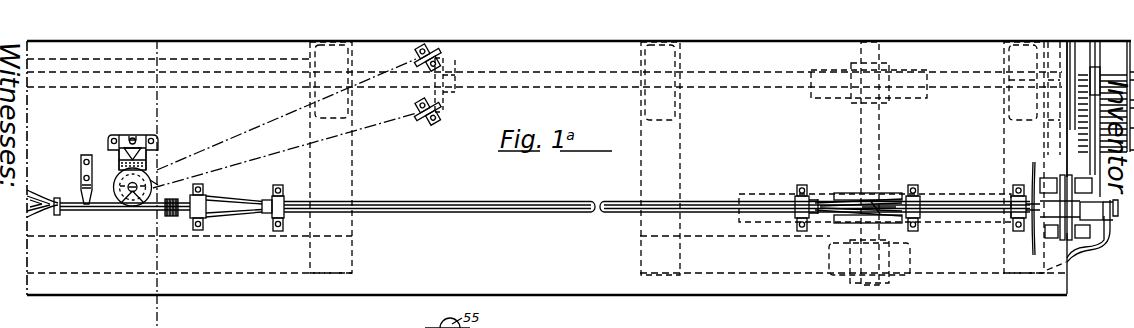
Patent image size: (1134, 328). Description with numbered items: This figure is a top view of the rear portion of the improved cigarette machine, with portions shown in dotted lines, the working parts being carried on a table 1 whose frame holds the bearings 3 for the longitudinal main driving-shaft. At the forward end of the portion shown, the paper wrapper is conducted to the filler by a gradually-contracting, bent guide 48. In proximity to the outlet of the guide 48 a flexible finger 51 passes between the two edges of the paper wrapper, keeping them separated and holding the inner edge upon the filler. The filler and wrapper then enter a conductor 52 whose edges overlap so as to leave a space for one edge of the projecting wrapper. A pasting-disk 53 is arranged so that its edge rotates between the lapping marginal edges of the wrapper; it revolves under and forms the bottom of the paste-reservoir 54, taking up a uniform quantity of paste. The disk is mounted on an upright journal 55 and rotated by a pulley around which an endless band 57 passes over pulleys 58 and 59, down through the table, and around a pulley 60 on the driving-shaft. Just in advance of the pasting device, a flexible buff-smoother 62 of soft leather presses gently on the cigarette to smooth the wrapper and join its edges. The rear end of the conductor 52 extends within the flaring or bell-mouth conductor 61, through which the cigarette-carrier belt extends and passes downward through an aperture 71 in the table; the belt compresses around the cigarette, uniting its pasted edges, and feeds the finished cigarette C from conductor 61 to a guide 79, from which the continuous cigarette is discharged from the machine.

The table 1 is at (579, 183).
The bearings 3 is at (1024, 157).
The gradually-contracting guide 48 is at (58, 192).
The flexible finger 51 is at (87, 155).
The conductor 52 is at (108, 208).
The pasting-disk 53 is at (158, 182).
The paste-reservoir 54 is at (118, 180).
The upright journal 55 is at (150, 168).
The endless band 57 is at (360, 130).
The pulley 58 is at (440, 53).
The pulley 59 is at (428, 118).
The pulley 60 is at (449, 100).
The flaring or bell-mouth conductor 61 is at (400, 208).
The flexible buff-smoother 62 is at (190, 222).
The aperture 71 is at (849, 198).
The guide or conductor 79 is at (1011, 196).
The cigarette C is at (868, 210).